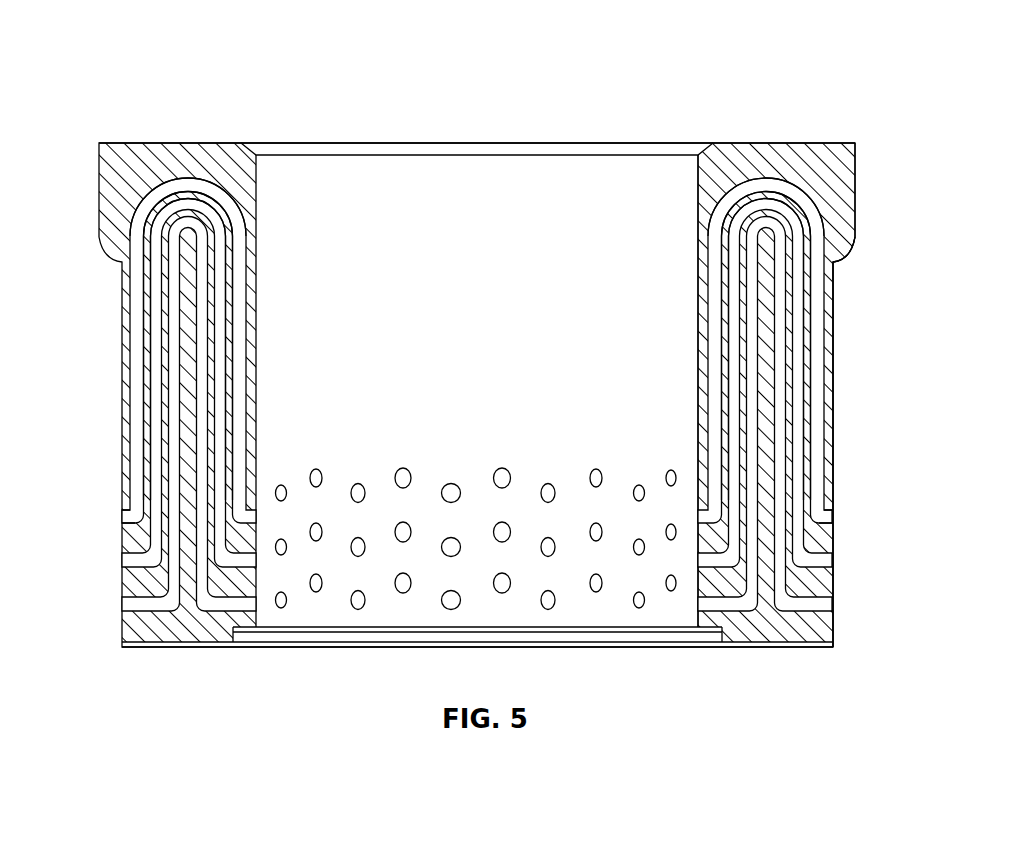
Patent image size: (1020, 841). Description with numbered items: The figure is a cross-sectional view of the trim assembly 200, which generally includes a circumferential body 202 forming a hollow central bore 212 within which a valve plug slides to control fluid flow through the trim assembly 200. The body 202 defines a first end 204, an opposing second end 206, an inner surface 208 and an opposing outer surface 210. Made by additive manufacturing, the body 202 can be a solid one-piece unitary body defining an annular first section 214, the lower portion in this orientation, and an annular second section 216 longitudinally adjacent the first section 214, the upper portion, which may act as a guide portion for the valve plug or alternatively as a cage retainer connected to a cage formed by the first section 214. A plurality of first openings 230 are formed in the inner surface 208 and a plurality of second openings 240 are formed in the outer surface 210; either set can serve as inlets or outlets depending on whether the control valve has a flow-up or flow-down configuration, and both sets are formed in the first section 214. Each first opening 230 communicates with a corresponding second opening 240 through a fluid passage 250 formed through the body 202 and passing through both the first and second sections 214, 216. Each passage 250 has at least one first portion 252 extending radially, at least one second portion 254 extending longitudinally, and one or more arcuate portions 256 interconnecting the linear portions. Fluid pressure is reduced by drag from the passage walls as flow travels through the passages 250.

The trim assembly 200 is at (143, 46).
The circumferential body 202 is at (818, 160).
The first end 204 is at (737, 143).
The second end 206 is at (745, 650).
The inner surface 208 is at (698, 250).
The outer surface 210 is at (833, 337).
The hollow central bore 212 is at (465, 244).
The first section 214 is at (837, 633).
The second section 216 is at (836, 277).
The first openings 230 is at (451, 483).
The second openings 240 is at (122, 604).
The fluid passages 250 is at (139, 320).
The first portion 252 is at (805, 530).
The second portion 254 is at (240, 318).
The arcuate portions 256 is at (163, 175).